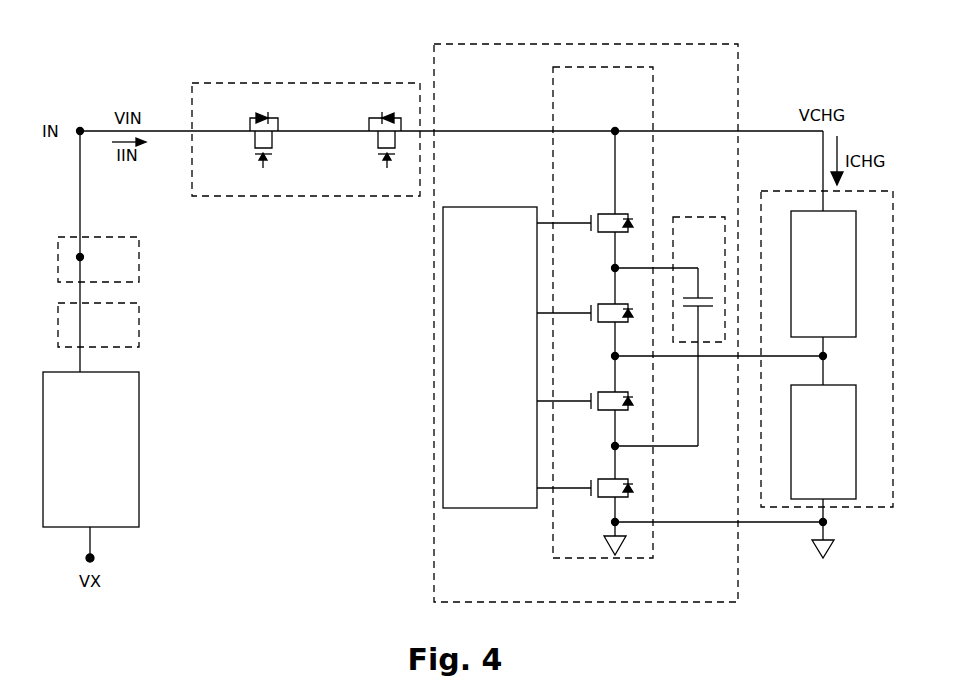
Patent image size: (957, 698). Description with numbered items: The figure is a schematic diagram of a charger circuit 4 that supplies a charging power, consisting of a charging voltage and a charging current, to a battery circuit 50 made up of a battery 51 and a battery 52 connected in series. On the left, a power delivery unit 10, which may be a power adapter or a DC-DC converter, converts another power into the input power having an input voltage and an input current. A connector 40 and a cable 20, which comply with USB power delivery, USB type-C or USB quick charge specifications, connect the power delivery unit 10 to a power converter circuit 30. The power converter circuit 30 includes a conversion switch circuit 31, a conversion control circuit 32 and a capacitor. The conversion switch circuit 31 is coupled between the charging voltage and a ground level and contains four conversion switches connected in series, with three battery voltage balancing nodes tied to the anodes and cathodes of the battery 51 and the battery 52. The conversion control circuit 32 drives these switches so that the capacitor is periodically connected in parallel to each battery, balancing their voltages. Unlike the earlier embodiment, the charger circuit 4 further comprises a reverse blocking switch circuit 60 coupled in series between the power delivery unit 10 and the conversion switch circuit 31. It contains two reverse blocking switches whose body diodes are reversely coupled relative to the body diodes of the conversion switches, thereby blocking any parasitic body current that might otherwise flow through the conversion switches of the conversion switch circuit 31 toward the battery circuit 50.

The charger circuit 4 is at (129, 63).
The power delivery unit 10 is at (81, 510).
The cable 20 is at (102, 333).
The power converter circuit 30 is at (697, 592).
The conversion switch circuit 31 is at (618, 105).
The conversion control circuit 32 is at (480, 368).
The connector 40 is at (102, 268).
The battery circuit 50 is at (862, 495).
The battery 51 is at (813, 312).
The battery 52 is at (813, 480).
The reverse blocking switch circuit 60 is at (204, 185).